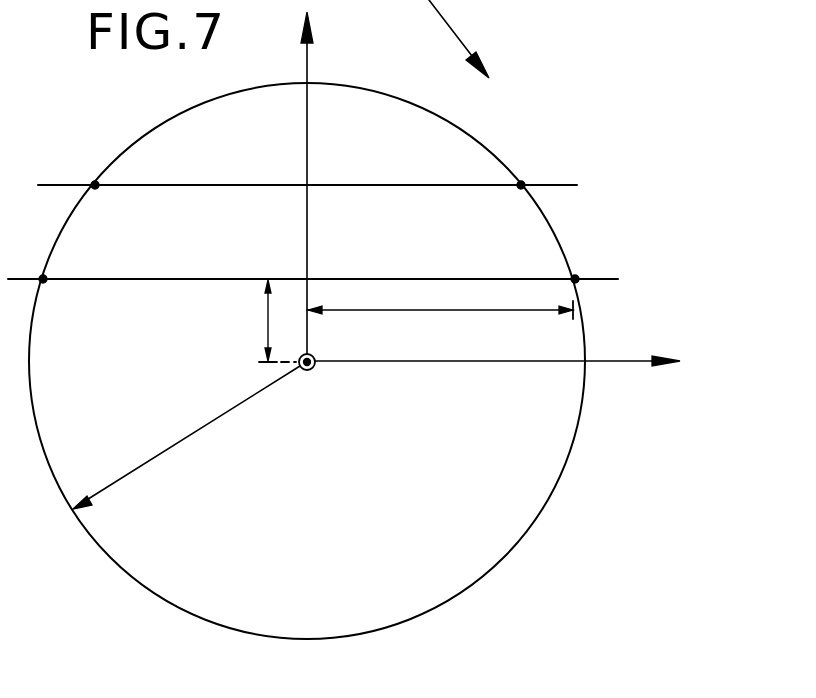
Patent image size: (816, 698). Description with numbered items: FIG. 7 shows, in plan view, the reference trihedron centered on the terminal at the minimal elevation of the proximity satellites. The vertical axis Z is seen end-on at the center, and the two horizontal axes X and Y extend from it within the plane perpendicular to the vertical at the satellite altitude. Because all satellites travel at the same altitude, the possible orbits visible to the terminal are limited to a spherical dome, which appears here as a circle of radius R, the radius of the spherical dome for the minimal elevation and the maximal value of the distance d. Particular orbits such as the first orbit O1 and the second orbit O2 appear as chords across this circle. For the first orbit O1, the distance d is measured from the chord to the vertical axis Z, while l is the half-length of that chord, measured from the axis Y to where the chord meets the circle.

The first orbit O1 is at (336, 280).
The second orbit O2 is at (330, 186).
The radius of the spherical dome R is at (180, 444).
The distance from chord to Oz axis d is at (272, 321).
The half-length of chord l is at (440, 299).
The Tz axis Z is at (316, 381).
The Tx axis X is at (509, 189).
The Ty axis Y is at (318, 183).